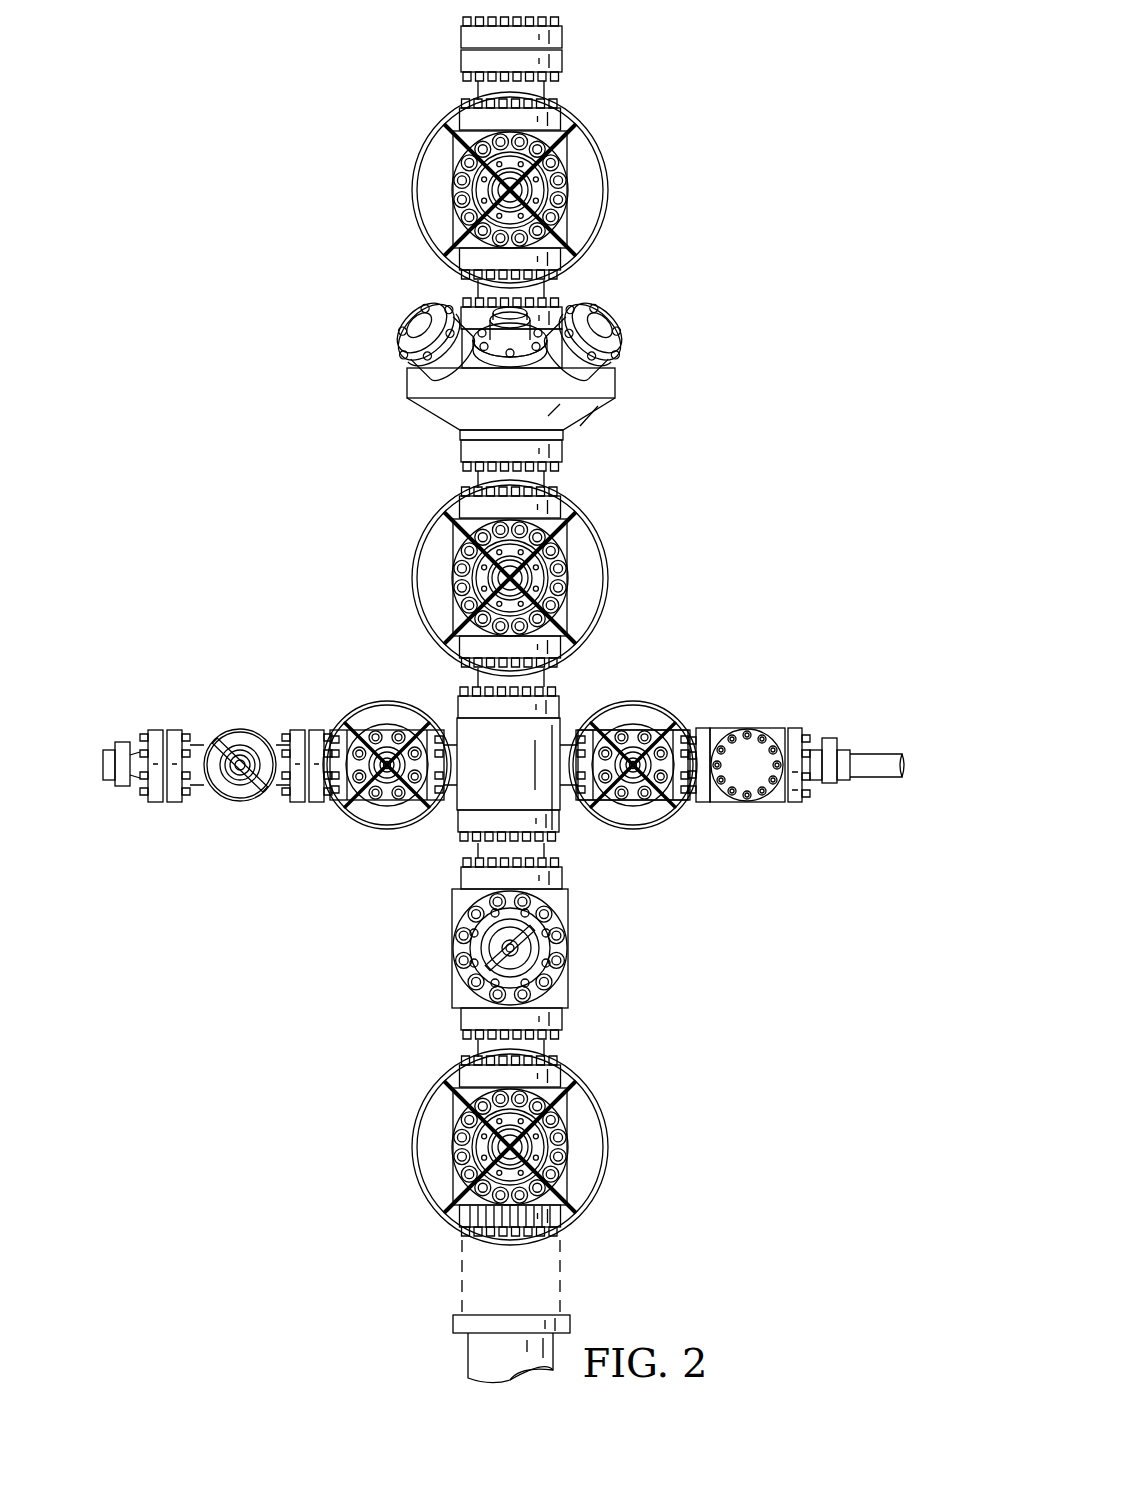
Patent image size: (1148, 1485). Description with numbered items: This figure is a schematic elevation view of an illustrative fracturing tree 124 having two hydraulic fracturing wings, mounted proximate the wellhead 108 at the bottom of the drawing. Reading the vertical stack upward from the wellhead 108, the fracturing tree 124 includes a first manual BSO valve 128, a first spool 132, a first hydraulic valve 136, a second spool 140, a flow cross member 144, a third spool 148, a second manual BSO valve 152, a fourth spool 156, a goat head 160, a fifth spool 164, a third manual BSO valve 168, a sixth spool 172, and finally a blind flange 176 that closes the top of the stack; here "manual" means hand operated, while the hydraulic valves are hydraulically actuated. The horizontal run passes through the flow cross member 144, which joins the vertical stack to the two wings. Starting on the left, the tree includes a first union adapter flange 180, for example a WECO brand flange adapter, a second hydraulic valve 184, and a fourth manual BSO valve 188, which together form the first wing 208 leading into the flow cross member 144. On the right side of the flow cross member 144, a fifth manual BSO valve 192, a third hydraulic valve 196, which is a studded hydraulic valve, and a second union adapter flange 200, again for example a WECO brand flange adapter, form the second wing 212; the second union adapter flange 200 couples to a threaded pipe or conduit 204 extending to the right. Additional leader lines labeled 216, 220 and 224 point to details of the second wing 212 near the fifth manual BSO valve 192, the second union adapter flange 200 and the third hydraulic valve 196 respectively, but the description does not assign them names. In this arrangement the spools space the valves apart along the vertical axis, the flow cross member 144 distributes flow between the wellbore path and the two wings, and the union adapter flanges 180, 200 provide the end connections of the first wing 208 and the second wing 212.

The wellhead 108 is at (453, 1323).
The fracturing tree 124 is at (700, 398).
The first manual BSO valve 128 is at (568, 1175).
The first spool 132 is at (562, 1020).
The first hydraulic valve 136 is at (568, 945).
The second spool 140 is at (457, 822).
The flow cross member 144 is at (565, 812).
The third spool 148 is at (457, 703).
The second manual BSO valve 152 is at (450, 540).
The fourth spool 156 is at (562, 452).
The goat head 160 is at (615, 386).
The fifth spool 164 is at (562, 302).
The third manual BSO valve 168 is at (572, 152).
The sixth spool 172 is at (562, 62).
The blind flange 176 is at (562, 40).
The first union adapter flange 180 is at (158, 730).
The second hydraulic valve 184 is at (238, 729).
The fourth manual BSO valve 188 is at (385, 727).
The fifth manual BSO valve 192 is at (648, 727).
The third hydraulic valve 196 is at (735, 728).
The second union adapter flange 200 is at (796, 728).
The threaded pipe or conduit 204 is at (870, 755).
The first wing 208 is at (285, 786).
The second wing 212 is at (645, 802).
The flange bolts 216 is at (672, 731).
The connector 220 is at (805, 790).
The spool 224 is at (702, 802).